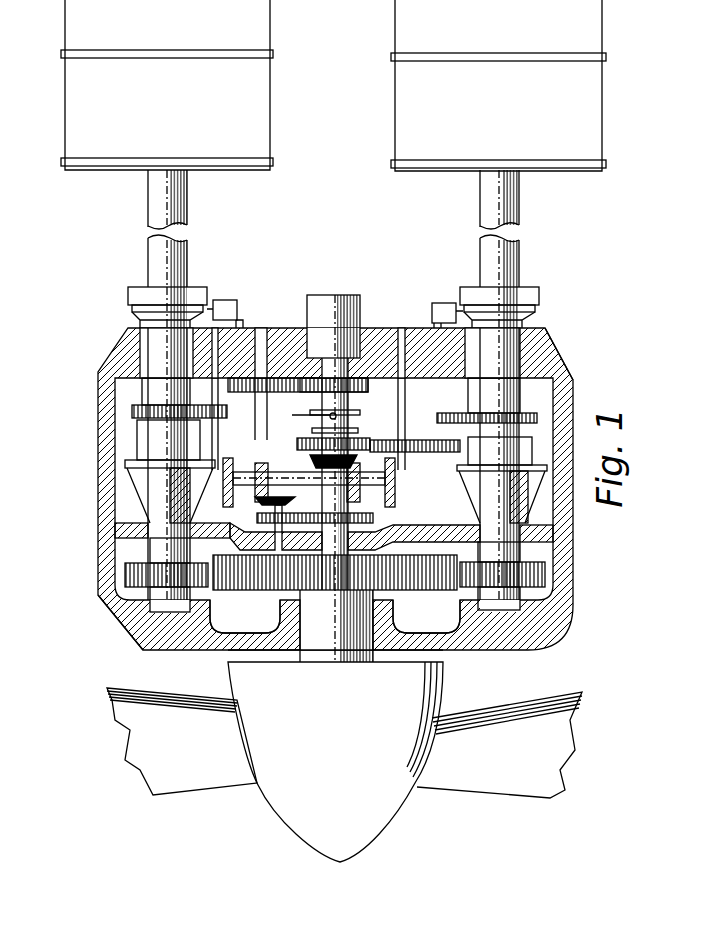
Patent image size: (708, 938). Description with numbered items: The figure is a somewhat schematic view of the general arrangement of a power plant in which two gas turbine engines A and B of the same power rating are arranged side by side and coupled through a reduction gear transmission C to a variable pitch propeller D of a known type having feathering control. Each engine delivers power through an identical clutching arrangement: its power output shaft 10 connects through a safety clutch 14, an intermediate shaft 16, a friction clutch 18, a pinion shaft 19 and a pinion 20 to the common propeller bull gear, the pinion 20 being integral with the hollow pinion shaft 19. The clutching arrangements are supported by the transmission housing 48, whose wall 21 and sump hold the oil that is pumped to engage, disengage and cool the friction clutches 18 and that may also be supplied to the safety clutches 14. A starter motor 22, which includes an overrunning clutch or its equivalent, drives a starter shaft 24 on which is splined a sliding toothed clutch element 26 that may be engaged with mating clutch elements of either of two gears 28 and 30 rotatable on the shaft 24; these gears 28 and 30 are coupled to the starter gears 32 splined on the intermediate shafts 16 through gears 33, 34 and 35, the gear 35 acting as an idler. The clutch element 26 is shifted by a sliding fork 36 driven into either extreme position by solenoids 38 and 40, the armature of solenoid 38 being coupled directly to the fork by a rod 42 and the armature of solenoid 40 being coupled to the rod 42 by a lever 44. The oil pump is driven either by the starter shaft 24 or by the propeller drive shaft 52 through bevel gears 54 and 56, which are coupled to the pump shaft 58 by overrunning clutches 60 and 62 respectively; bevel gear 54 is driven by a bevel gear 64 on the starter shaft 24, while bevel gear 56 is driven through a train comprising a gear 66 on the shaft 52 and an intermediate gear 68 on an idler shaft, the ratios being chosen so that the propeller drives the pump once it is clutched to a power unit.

The gas turbine engine A is at (70, 105).
The gas turbine engine B is at (402, 118).
The reduction gear transmission C is at (118, 372).
The variable pitch propeller D is at (475, 777).
The power output shaft 10 is at (152, 262).
The safety clutch 14 is at (135, 302).
The intermediate shaft 16 is at (145, 395).
The friction clutch 18 is at (130, 487).
The pinion shaft 19 is at (152, 552).
The pinion 20 is at (123, 575).
The casing top wall 21 is at (572, 362).
The starter motor 22 is at (310, 297).
The starter shaft 24 is at (330, 477).
The sliding toothed clutch element 26 is at (335, 405).
The gear 28 is at (356, 382).
The gear 30 is at (400, 442).
The starter gear 32 is at (133, 420).
The gear 33 is at (242, 326).
The gear 34 is at (358, 466).
The idler gear 35 is at (463, 412).
The sliding fork 36 is at (300, 440).
The solenoid 38 is at (447, 516).
The solenoid 40 is at (560, 533).
The rod 42 is at (412, 575).
The lever 44 is at (500, 455).
The transmission housing 48 is at (132, 625).
The propeller drive shaft 52 is at (318, 652).
The bevel gear 54 is at (348, 503).
The bevel gear 56 is at (228, 458).
The pump shaft 58 is at (398, 490).
The overrunning clutch 60 is at (260, 524).
The overrunning clutch 62 is at (262, 462).
The bevel gear 64 is at (300, 476).
The gear 66 is at (300, 560).
The intermediate gear 68 is at (260, 592).